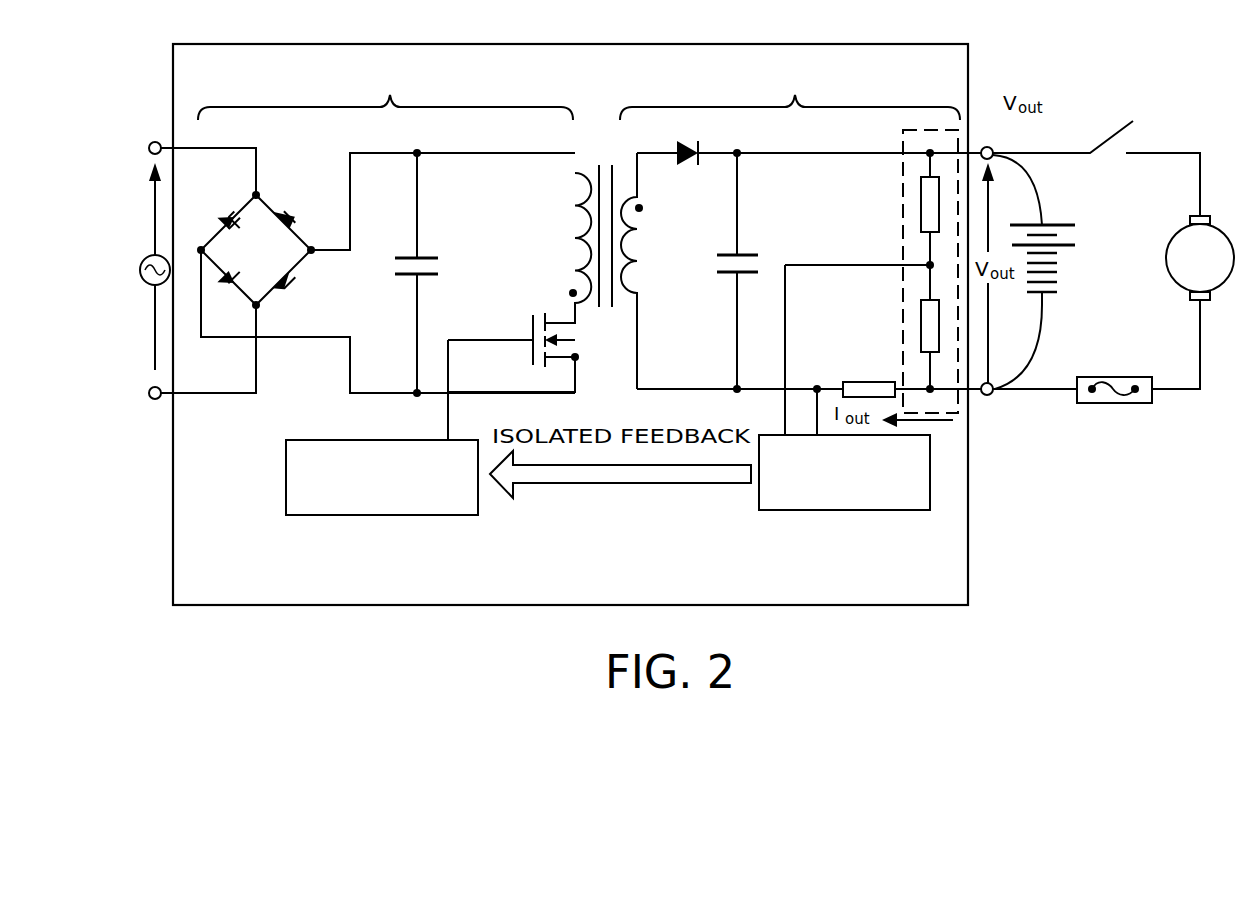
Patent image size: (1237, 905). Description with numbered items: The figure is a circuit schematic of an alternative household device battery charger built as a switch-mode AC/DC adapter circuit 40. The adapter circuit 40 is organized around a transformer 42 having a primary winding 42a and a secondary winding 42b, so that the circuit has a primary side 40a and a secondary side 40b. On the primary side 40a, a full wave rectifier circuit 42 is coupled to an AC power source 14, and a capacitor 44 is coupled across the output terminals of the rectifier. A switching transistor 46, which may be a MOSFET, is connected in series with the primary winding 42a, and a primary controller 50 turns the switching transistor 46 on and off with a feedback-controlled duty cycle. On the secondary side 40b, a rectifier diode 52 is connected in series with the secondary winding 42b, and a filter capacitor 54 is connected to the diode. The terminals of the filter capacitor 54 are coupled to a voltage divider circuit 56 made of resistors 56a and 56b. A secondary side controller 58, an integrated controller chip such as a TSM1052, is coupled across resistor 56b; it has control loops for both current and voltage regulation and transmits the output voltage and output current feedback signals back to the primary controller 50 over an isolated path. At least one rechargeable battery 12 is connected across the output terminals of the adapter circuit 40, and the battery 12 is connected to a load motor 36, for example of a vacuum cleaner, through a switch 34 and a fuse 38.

The switch-mode AC/DC adapter circuit 40 is at (565, 43).
The primary side 40a is at (385, 94).
The secondary side 40b is at (790, 94).
The rechargeable battery 12 is at (1058, 225).
The AC power source 14 is at (140, 266).
The switch 34 is at (1117, 132).
The load motor 36 is at (1165, 247).
The fuse 38 is at (1107, 377).
The transformer 42 is at (262, 197).
The primary winding 42a is at (573, 228).
The secondary winding 42b is at (633, 263).
The capacitor 44 is at (440, 265).
The switching transistor 46 is at (529, 331).
The primary controller 50 is at (318, 440).
The rectifier diode 52 is at (678, 163).
The filter capacitor 54 is at (745, 256).
The voltage divider circuit 56 is at (910, 295).
The resistor 56a is at (921, 222).
The resistor 56b is at (921, 327).
The secondary side controller 58 is at (818, 512).